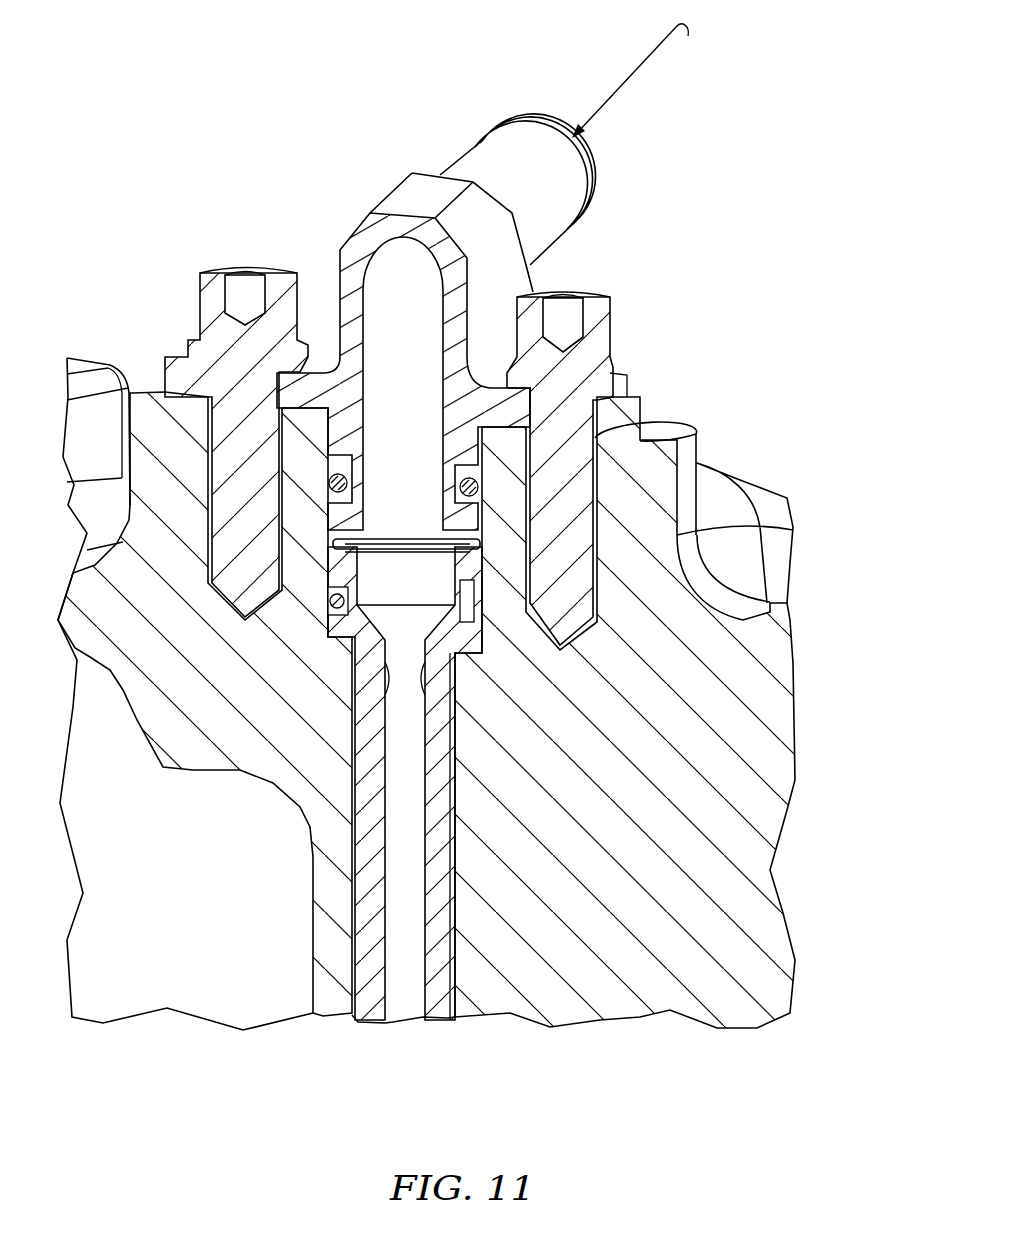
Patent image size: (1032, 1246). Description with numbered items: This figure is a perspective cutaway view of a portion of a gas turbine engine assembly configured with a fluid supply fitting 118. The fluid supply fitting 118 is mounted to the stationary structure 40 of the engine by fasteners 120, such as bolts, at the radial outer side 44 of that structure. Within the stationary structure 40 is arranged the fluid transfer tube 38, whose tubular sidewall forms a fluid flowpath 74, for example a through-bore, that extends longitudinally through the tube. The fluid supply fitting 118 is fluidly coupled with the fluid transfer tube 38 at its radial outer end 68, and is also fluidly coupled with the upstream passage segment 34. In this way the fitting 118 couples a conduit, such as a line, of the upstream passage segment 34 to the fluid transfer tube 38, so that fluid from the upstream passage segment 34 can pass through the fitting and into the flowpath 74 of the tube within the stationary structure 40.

The fluid supply fitting 118 is at (428, 157).
The upstream passage segment 34 is at (650, 70).
The fasteners 120 is at (203, 267).
The radial outer side 44 is at (678, 428).
The stationary structure 40 is at (802, 651).
The radial outer end 68 is at (474, 555).
The fluid flowpath 74 is at (410, 1003).
The fluid transfer tube 38 is at (388, 1036).